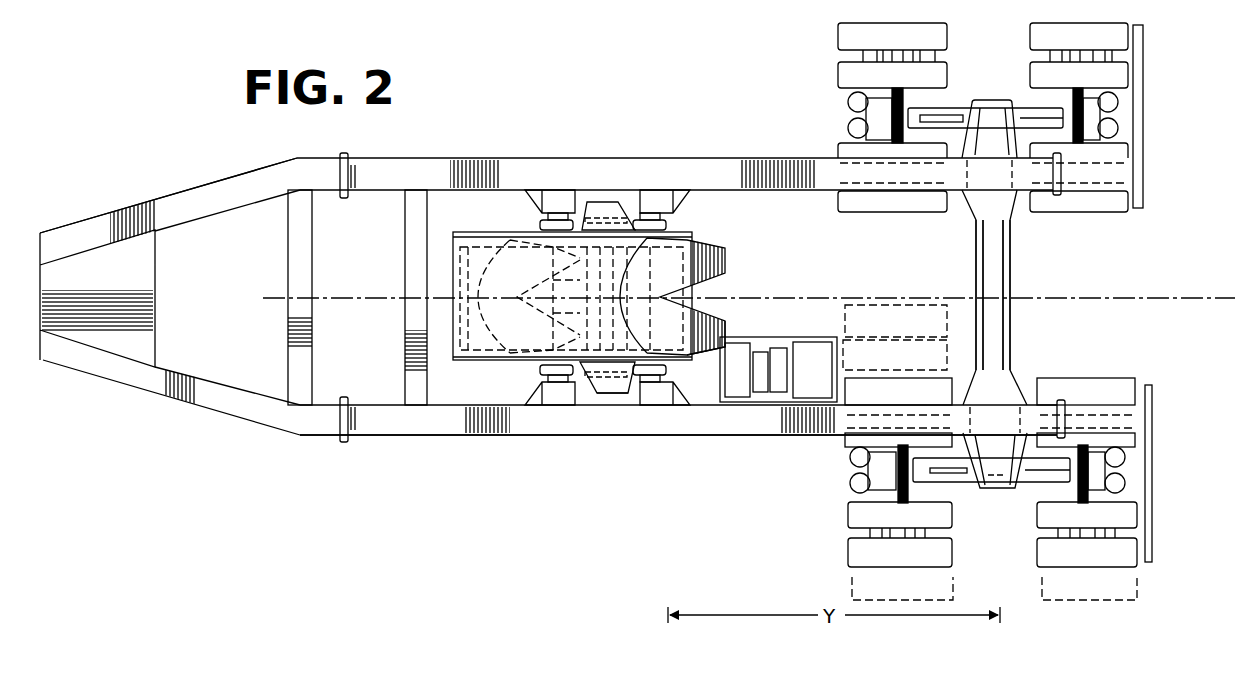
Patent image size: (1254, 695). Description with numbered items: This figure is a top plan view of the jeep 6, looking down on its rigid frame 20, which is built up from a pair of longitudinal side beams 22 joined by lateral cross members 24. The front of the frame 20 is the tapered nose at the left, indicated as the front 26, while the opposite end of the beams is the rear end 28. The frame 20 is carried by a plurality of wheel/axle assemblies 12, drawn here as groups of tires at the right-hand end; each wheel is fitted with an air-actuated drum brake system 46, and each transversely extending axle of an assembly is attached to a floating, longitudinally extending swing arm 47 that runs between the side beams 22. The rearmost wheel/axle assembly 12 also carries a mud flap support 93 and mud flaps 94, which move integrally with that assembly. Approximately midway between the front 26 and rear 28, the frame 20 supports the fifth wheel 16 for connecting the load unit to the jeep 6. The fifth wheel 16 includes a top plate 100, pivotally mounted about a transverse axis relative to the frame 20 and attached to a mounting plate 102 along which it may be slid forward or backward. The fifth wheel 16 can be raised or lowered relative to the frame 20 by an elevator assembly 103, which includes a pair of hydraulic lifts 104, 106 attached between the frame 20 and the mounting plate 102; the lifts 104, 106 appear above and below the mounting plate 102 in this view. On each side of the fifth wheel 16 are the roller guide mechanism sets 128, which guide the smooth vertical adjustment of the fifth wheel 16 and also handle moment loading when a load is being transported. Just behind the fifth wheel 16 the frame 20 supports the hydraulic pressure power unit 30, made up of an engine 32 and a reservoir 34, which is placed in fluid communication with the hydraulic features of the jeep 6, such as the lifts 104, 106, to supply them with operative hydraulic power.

The jeep 6 is at (242, 175).
The wheel/axle assemblies 12 is at (826, 47).
The fifth wheel 16 is at (717, 245).
The rigid frame 20 is at (375, 447).
The longitudinal side beams 22 is at (748, 160).
The lateral cross members 24 is at (302, 250).
The front of the frame 26 is at (38, 282).
The rear end of the frame 28 is at (1043, 185).
The hydraulic pressure power unit 30 is at (778, 397).
The engine 32 is at (774, 409).
The reservoir 34 is at (802, 400).
The drum brake system 46 is at (1122, 100).
The swing arm 47 is at (1016, 91).
The mud flap support 93 is at (1128, 120).
The mud flaps 94 is at (1150, 400).
The top plate 100 is at (727, 318).
The mounting plate 102 is at (517, 363).
The elevator assembly 103 is at (611, 400).
The hydraulic lift 104 is at (606, 205).
The hydraulic lift 106 is at (600, 387).
The roller guide mechanism sets 128 is at (541, 148).